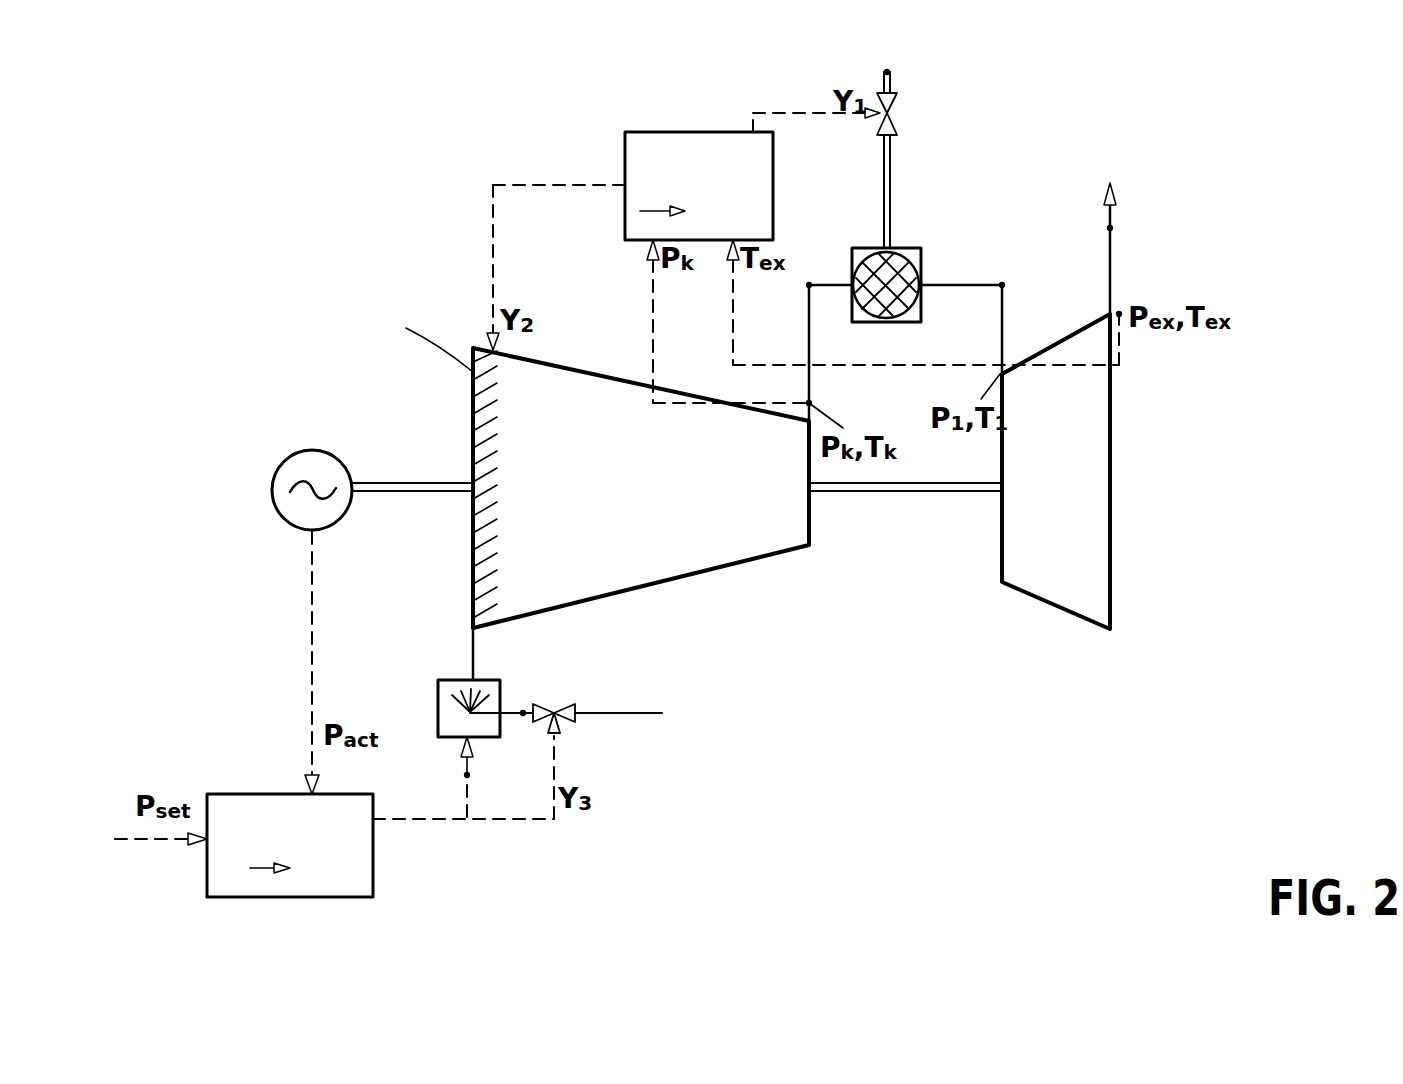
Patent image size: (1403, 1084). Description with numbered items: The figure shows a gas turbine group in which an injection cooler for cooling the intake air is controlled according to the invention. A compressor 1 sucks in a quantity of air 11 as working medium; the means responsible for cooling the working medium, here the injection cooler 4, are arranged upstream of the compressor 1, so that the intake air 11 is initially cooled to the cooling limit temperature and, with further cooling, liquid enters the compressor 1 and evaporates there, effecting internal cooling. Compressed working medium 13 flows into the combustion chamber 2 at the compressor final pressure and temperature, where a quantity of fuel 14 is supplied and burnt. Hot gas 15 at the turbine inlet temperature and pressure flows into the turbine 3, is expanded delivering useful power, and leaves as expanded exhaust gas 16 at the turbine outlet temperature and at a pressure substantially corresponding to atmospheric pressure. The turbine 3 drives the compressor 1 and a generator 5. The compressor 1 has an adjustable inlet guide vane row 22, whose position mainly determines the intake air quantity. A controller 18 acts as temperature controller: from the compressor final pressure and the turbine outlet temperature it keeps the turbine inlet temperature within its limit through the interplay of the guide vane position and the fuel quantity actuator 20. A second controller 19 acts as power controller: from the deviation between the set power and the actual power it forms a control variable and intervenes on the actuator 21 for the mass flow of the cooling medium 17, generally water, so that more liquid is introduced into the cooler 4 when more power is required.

The compressor 1 is at (650, 514).
The combustion chamber 2 is at (912, 248).
The turbine 3 is at (1075, 512).
The injection cooler 4 is at (494, 680).
The generator 5 is at (322, 452).
The quantity of air 11 is at (467, 775).
The compressed working medium 13 is at (810, 283).
The quantity of fuel 14 is at (887, 72).
The hot gas 15 is at (1001, 283).
The expanded exhaust gas 16 is at (1110, 228).
The cooling medium 17 is at (523, 713).
The controller 18 is at (658, 132).
The second controller 19 is at (373, 888).
The fuel quantity actuator 20 is at (887, 113).
The actuator 21 is at (560, 706).
The inlet guide vane row 22 is at (478, 407).